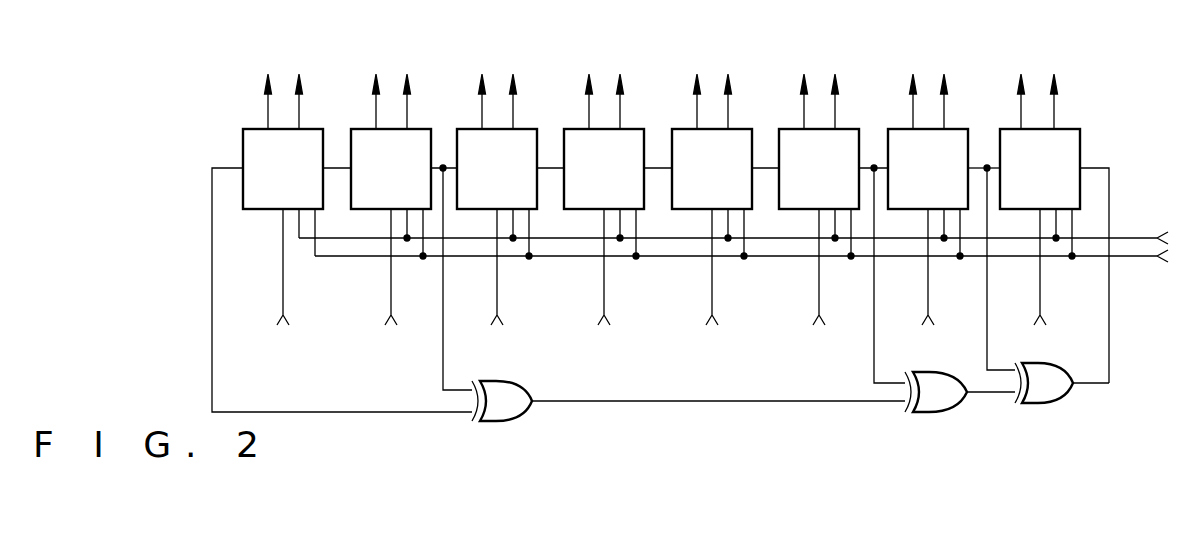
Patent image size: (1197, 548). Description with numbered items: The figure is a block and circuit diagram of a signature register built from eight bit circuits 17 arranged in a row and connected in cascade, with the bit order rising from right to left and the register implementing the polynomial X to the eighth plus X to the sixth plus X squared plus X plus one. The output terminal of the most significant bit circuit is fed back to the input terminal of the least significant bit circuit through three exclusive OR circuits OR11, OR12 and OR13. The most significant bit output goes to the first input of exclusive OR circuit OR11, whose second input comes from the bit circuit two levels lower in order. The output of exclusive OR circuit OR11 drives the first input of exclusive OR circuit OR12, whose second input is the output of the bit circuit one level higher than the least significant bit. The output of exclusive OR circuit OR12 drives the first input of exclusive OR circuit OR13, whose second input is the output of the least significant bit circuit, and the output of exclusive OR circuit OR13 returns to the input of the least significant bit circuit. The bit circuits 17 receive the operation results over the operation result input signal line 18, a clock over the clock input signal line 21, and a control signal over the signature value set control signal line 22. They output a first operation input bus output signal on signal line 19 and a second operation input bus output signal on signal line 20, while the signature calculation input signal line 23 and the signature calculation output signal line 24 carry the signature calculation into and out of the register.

The bit circuit 17 is at (1082, 135).
The operation result input signal line 18 is at (1040, 300).
The first operation input bus output signal line 19 is at (1057, 90).
The second operation input bus output signal line 20 is at (1019, 90).
The clock input signal line 21 is at (1125, 237).
The signature value set control signal line 22 is at (1140, 258).
The signature calculation input signal line 23 is at (1097, 168).
The signature calculation output signal line 24 is at (987, 166).
The exclusive OR circuit OR11 is at (527, 388).
The exclusive OR circuit OR12 is at (945, 413).
The exclusive OR circuit OR13 is at (1058, 403).